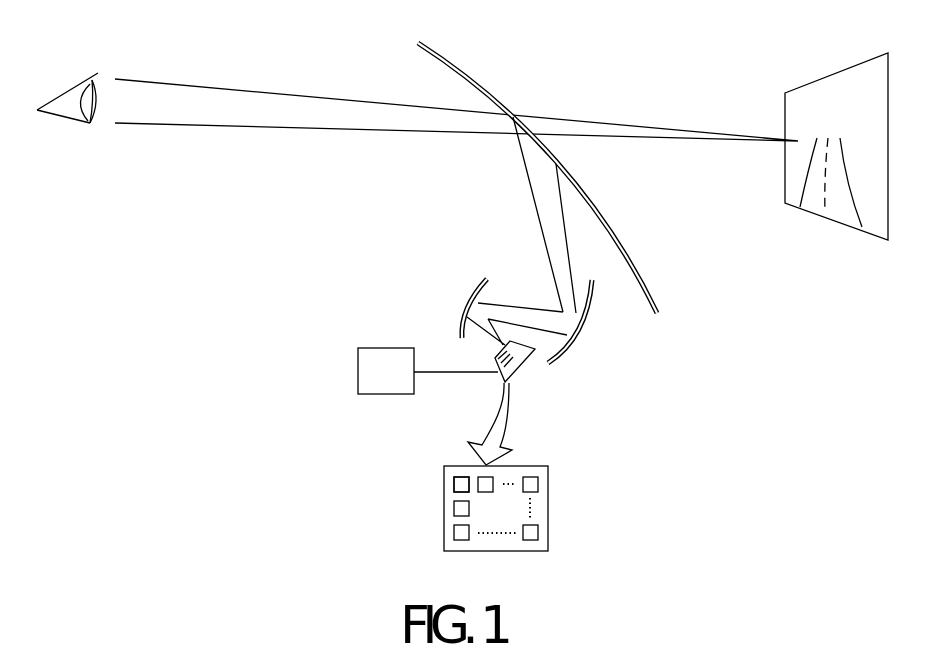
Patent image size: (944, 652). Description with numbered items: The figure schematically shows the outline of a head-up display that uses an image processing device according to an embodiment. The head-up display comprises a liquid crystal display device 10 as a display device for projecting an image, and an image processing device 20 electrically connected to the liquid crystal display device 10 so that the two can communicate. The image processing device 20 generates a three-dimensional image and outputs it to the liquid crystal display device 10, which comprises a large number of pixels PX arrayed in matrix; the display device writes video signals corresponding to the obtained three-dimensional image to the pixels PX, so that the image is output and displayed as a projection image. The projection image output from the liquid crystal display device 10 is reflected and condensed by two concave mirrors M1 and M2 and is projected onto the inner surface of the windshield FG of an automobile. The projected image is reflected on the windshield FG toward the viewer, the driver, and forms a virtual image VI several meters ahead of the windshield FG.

The windshield FG is at (450, 58).
The virtual image VI is at (827, 88).
The concave mirror M1 is at (465, 317).
The concave mirror M2 is at (590, 311).
The image processing device 20 is at (358, 372).
The liquid crystal display device 10 is at (517, 370).
The pixel PX is at (454, 484).